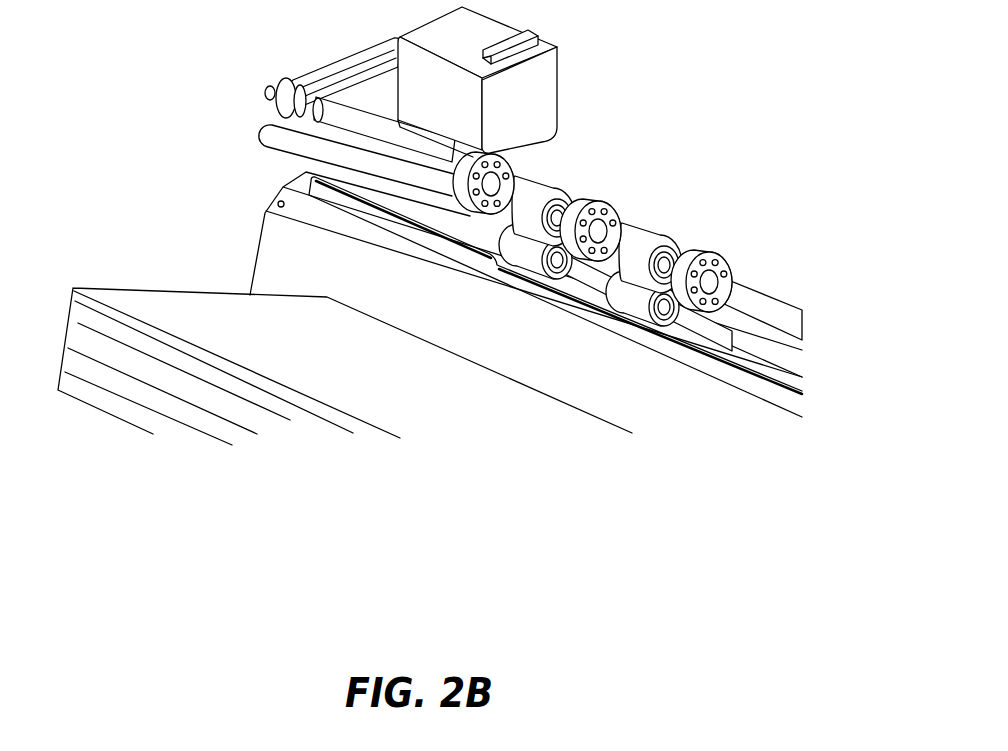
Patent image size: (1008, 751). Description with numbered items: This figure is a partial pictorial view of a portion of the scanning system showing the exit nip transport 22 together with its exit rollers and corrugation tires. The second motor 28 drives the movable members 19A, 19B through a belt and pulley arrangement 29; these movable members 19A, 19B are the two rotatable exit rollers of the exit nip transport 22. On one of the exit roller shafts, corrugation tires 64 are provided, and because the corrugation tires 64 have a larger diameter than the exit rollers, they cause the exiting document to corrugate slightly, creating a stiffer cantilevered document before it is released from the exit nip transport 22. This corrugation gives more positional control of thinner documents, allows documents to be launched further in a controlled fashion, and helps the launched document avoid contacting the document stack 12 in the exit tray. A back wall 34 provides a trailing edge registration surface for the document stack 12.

The document stack 12 is at (65, 338).
The back wall 34 is at (254, 262).
The movable member 19A is at (522, 283).
The movable member 19B is at (653, 311).
The exit nip transport 22 is at (688, 190).
The corrugation tires 64 is at (512, 166).
The belt and pulley arrangement 29 is at (338, 58).
The second motor 28 is at (558, 97).